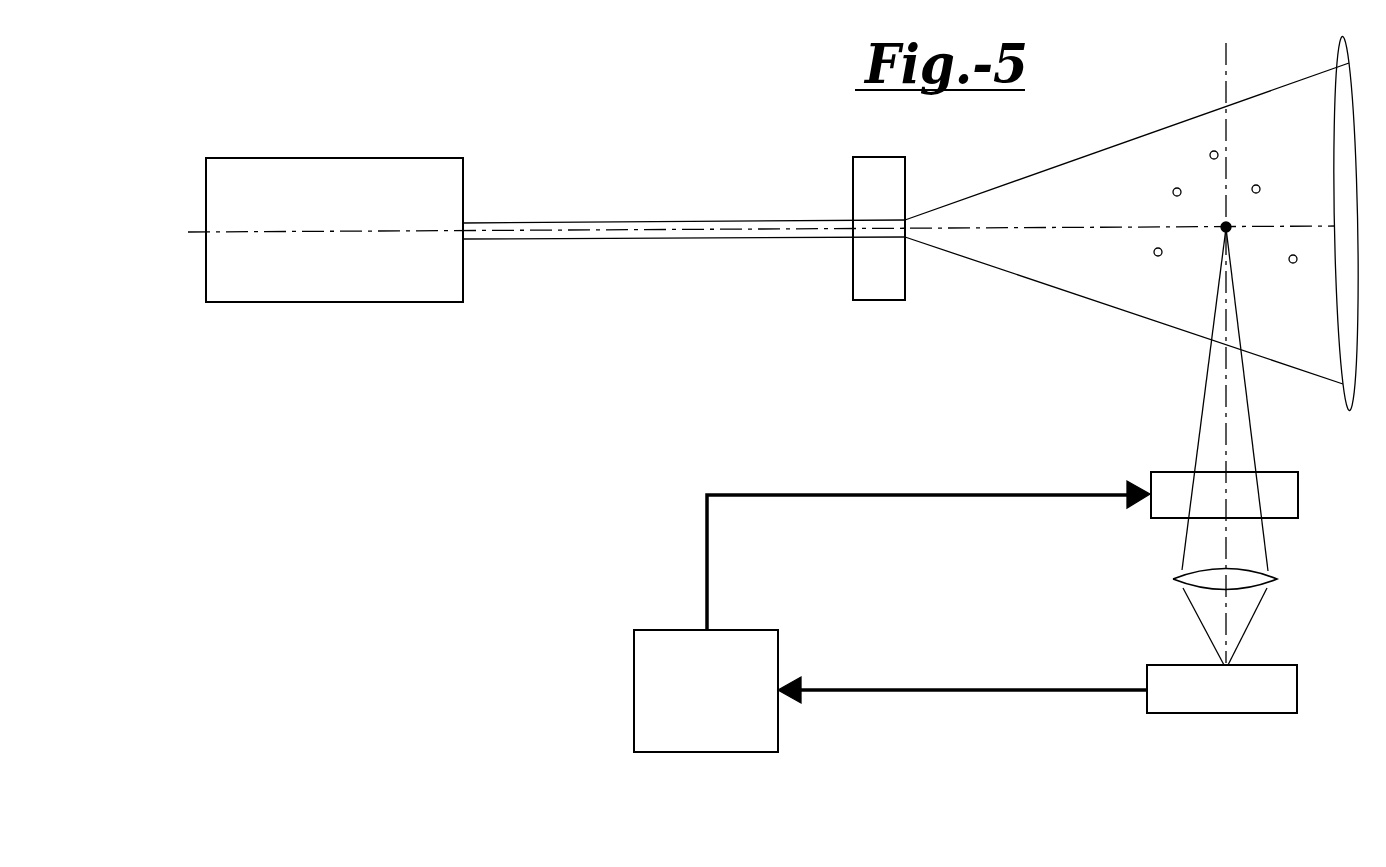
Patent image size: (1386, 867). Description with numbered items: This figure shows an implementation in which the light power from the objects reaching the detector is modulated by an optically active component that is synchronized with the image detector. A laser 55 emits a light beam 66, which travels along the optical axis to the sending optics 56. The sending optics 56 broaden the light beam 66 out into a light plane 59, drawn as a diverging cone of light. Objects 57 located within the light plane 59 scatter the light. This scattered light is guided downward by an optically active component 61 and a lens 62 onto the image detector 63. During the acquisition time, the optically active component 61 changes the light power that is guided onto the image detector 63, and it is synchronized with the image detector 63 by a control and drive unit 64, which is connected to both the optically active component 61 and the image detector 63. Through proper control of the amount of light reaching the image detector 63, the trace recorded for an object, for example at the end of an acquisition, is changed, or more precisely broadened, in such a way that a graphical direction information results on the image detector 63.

The laser 55 is at (424, 157).
The sending optics 56 is at (860, 156).
The objects 57 is at (1231, 230).
The light plane 59 is at (1168, 125).
The optically active component 61 is at (1283, 470).
The lens 62 is at (1276, 577).
The image detector 63 is at (1276, 665).
The control and drive unit 64 is at (653, 628).
The light beam 66 is at (678, 220).